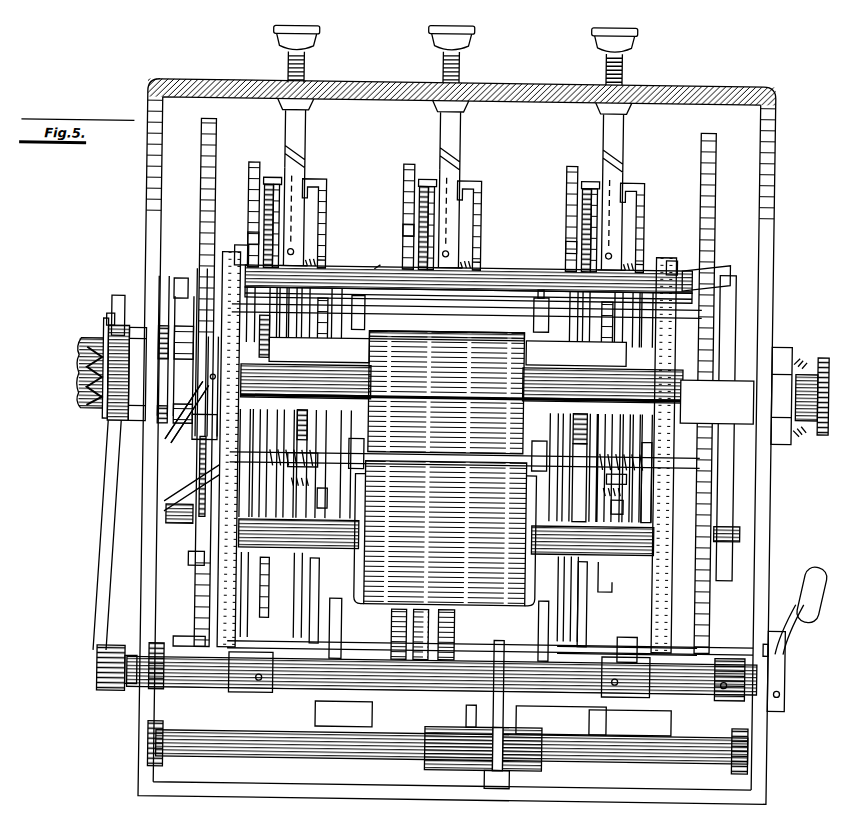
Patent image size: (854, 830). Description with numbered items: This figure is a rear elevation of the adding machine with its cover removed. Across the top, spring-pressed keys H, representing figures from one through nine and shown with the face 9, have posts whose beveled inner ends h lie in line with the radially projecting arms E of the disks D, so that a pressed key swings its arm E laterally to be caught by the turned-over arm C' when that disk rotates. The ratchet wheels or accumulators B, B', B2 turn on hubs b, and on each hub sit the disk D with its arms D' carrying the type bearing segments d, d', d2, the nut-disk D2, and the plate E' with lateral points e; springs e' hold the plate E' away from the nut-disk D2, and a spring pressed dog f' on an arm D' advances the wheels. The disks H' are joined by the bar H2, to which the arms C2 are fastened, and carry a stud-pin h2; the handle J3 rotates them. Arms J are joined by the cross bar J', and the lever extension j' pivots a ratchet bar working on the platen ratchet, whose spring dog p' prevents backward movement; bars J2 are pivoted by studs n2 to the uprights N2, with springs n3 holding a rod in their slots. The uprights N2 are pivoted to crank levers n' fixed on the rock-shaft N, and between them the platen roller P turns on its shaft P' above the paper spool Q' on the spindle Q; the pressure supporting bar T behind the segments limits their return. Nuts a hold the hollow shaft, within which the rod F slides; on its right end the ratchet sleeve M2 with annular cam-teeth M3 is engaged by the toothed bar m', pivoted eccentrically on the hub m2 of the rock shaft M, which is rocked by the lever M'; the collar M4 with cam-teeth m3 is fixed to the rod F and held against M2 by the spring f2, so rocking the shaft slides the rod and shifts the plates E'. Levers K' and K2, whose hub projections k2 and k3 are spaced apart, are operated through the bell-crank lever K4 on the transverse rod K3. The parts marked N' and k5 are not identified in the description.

The spring-pressed keys H is at (455, 55).
The knob cap 9 is at (455, 43).
The inner ends of key posts h is at (454, 135).
The radially projecting arms E is at (456, 215).
The arm of disk C C' is at (417, 373).
The disk D is at (465, 225).
The laterally extending points e is at (476, 209).
The plate E' is at (499, 253).
The ratchet wheel or accumulator B is at (242, 224).
The ratchet wheel or accumulator B' is at (398, 224).
The ratchet wheel or accumulator B2 is at (566, 248).
The studs n2 is at (381, 262).
The springs n3 is at (680, 258).
The disks H' is at (475, 386).
The arms J is at (484, 453).
The cross bar J' is at (184, 599).
The bars J2 is at (706, 278).
The handle J3 is at (180, 486).
The lever extension j' is at (174, 288).
The spring dog p' is at (154, 315).
The hubs b is at (180, 410).
The uprights N2 is at (656, 496).
The stud-pin h2 is at (742, 530).
The collar M4 is at (74, 345).
The cam-teeth m3 is at (85, 365).
The annular cam-teeth M3 is at (83, 415).
The ratchet wheel or sleeve M2 is at (103, 417).
The toothed bar m' is at (94, 535).
The hub m2 is at (100, 672).
The spring pressed dog f' is at (466, 315).
The arms of disk D D' is at (445, 536).
The platen shaft P' is at (462, 383).
The platen roller P is at (446, 392).
The pressure supporting bar T is at (735, 418).
The nuts a is at (778, 344).
The slidable rod F is at (808, 418).
The spring f2 is at (803, 360).
The spindle Q is at (464, 516).
The spool of paper Q' is at (445, 534).
The nut-disk D2 is at (457, 475).
The springs e' is at (459, 504).
The arms of disk C C2 is at (590, 610).
The lever K' is at (345, 628).
The lever K2 is at (466, 716).
The type bearing segment d is at (399, 634).
The type bearing segment d' is at (421, 634).
The type bearing segment d2 is at (446, 635).
The bar H2 is at (604, 644).
The rockable shaft M is at (441, 683).
The crank levers n' is at (439, 675).
The rock-shaft N is at (446, 681).
The transverse rod K3 is at (232, 745).
The projection k3 is at (343, 714).
The projection k2 is at (630, 723).
The bell-crank lever K4 is at (497, 716).
The foot k5 is at (515, 780).
The lever M' is at (800, 605).
The pawl N' is at (786, 671).